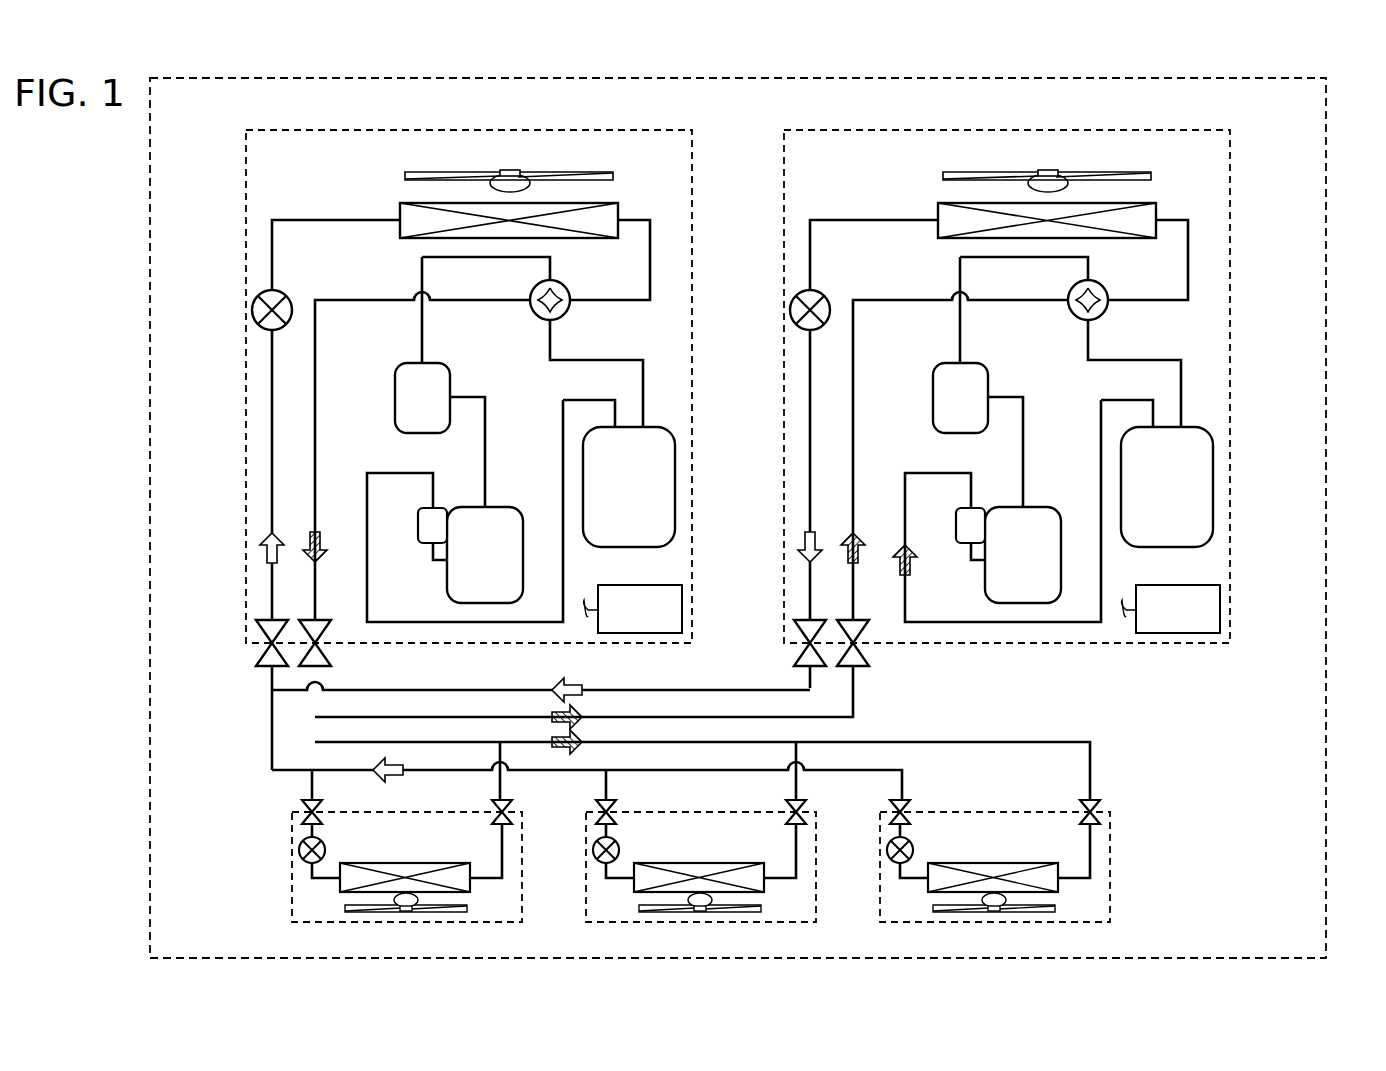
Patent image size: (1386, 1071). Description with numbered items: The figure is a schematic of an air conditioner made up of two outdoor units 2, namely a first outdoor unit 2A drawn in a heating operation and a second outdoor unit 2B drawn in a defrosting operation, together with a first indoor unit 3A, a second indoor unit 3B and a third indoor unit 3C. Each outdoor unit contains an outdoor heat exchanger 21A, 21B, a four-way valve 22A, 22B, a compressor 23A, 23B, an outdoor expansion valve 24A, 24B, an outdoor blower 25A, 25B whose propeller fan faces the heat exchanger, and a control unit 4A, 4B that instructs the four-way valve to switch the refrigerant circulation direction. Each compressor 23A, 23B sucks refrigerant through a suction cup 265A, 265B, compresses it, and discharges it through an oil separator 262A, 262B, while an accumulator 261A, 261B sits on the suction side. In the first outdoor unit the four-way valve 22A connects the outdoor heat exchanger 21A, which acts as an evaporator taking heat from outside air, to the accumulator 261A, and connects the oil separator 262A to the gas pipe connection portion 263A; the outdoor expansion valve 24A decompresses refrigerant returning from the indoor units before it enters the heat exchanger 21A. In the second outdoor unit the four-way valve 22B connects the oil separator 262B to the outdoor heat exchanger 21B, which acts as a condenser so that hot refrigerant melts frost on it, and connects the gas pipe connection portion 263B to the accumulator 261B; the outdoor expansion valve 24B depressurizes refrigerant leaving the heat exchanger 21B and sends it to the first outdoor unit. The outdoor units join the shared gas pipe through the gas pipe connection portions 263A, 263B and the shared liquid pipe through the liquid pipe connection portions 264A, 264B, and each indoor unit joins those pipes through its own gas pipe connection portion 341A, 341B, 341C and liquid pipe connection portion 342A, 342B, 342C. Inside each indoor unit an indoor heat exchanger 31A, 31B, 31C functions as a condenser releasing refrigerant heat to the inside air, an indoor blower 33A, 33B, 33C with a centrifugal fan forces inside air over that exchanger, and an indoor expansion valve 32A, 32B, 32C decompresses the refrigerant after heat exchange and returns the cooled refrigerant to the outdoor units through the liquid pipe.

The outdoor unit 2 is at (1328, 96).
The first outdoor unit 2A is at (304, 130).
The second outdoor unit 2B is at (1170, 130).
The first indoor unit 3A is at (397, 868).
The second indoor unit 3B is at (691, 868).
The third indoor unit 3C is at (985, 856).
The control unit 4A is at (638, 633).
The control unit 4B is at (1176, 633).
The outdoor heat exchanger 21A is at (560, 240).
The outdoor heat exchanger 21B is at (1098, 240).
The four-way valve 22A is at (534, 318).
The four-way valve 22B is at (1072, 318).
The compressor 23A is at (482, 506).
The compressor 23B is at (1020, 506).
The outdoor expansion valve 24A is at (284, 294).
The outdoor expansion valve 24B is at (822, 294).
The outdoor blower 25A is at (600, 173).
The outdoor blower 25B is at (1138, 173).
The accumulator 261A is at (603, 548).
The accumulator 261B is at (1141, 548).
The oil separator 262A is at (412, 364).
The oil separator 262B is at (950, 364).
The gas pipe connection portion 263A is at (302, 620).
The gas pipe connection portion 263B is at (840, 620).
The liquid pipe connection portion 264A is at (268, 620).
The liquid pipe connection portion 264B is at (806, 620).
The suction cup 265A is at (418, 524).
The suction cup 265B is at (956, 524).
The indoor heat exchanger 31A is at (458, 893).
The indoor heat exchanger 31B is at (752, 893).
The indoor heat exchanger 31C is at (1046, 893).
The indoor expansion valve 32A is at (298, 858).
The indoor expansion valve 32B is at (592, 858).
The indoor expansion valve 32C is at (886, 858).
The indoor blower 33A is at (363, 913).
The indoor blower 33B is at (657, 913).
The indoor blower 33C is at (951, 913).
The gas pipe connection portion 341A is at (496, 806).
The gas pipe connection portion 341B is at (790, 806).
The gas pipe connection portion 341C is at (1086, 802).
The liquid pipe connection portion 342A is at (304, 806).
The liquid pipe connection portion 342B is at (600, 806).
The liquid pipe connection portion 342C is at (894, 806).